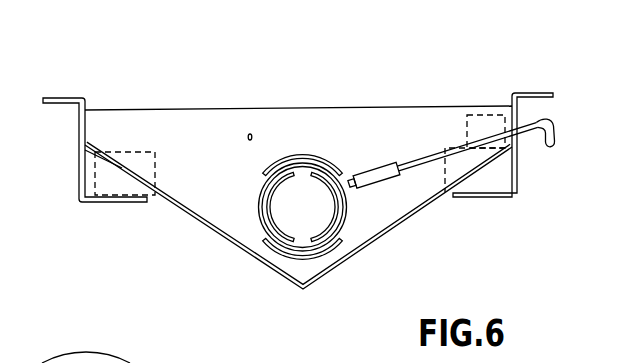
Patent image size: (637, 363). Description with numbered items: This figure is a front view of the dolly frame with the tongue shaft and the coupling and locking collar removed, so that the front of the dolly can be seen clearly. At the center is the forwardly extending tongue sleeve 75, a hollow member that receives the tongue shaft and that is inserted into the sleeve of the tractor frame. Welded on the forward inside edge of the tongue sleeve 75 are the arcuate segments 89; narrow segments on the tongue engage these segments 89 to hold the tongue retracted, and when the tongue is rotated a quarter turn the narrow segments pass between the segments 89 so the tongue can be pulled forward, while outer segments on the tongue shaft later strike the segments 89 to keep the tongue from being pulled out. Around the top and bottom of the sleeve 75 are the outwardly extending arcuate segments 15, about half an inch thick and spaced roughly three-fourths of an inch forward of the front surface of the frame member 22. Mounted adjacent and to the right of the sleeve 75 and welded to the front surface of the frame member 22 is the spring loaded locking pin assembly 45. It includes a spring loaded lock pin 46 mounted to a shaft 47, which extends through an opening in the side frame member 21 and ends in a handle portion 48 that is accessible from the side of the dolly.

The arcuate segments 15 is at (317, 155).
The side frame member 21 is at (64, 98).
The frame member 22 is at (287, 108).
The locking pin assembly 45 is at (471, 150).
The lock pin 46 is at (355, 197).
The shaft 47 is at (422, 170).
The handle portion 48 is at (557, 143).
The tongue sleeve 75 is at (338, 233).
The arcuate segments 89 is at (333, 213).